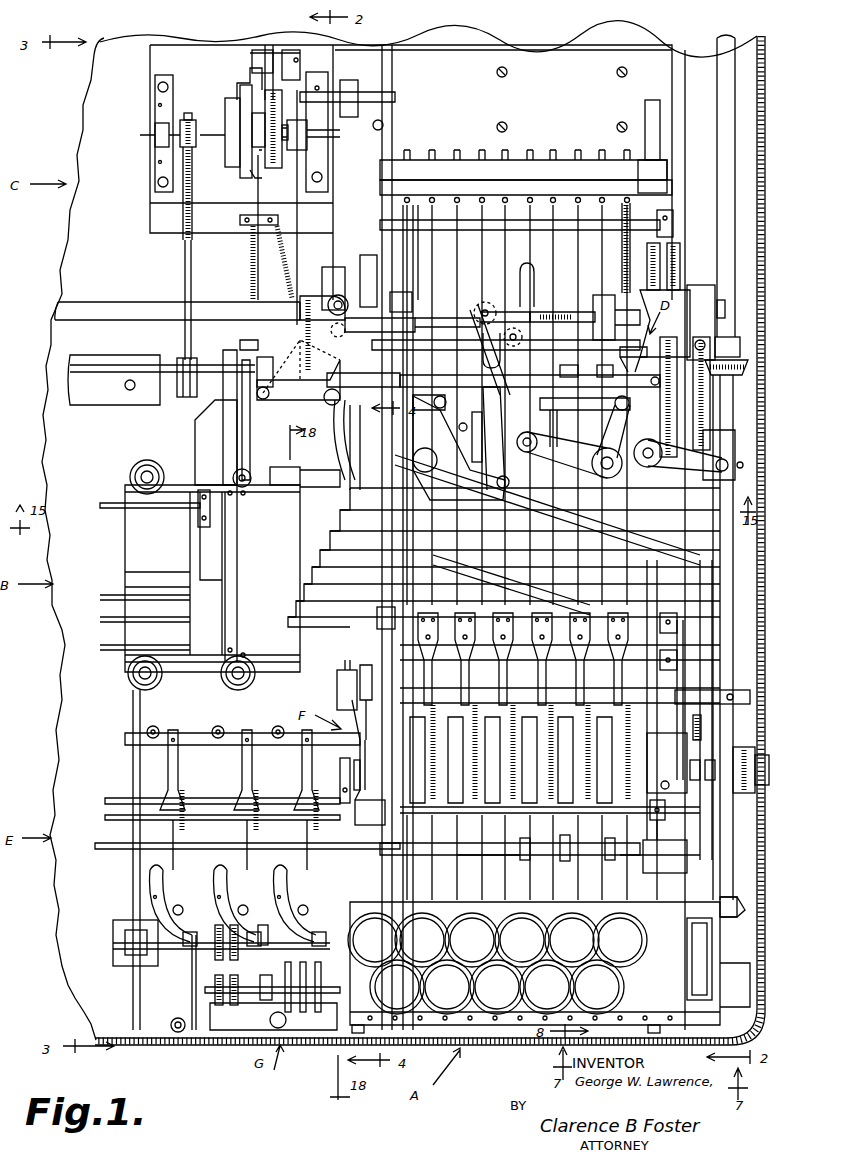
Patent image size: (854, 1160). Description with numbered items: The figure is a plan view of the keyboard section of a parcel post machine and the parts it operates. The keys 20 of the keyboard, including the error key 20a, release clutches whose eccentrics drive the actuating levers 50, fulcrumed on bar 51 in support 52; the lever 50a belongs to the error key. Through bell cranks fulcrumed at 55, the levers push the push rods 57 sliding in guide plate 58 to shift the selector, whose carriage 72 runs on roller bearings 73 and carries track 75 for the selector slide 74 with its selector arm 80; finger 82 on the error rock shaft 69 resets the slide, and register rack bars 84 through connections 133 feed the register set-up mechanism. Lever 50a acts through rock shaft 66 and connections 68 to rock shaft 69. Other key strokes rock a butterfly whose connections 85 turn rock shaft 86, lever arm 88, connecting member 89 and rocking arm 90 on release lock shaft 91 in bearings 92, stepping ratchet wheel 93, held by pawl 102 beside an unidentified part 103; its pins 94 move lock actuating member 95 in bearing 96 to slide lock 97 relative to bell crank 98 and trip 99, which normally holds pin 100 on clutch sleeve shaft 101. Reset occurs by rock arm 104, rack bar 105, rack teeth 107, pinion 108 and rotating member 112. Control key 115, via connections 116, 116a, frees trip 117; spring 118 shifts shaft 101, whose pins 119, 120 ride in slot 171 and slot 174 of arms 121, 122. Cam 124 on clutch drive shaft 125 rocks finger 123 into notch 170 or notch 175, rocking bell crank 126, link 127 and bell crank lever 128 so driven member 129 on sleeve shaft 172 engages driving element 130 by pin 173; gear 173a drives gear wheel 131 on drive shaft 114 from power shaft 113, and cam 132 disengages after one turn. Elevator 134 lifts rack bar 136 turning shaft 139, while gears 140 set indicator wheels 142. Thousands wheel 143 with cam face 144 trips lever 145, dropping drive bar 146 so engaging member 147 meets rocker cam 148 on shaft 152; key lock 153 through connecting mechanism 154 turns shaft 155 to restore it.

The keys 20 is at (630, 974).
The error key 20a is at (625, 990).
The actuating lever 50 is at (460, 150).
The actuating lever 50a is at (600, 155).
The bar 51 is at (548, 165).
The support 52 is at (645, 150).
The fulcrum 55 is at (380, 462).
The push rods 57 is at (340, 485).
The guide plate 58 is at (340, 698).
The rock shaft 66 is at (335, 708).
The connections 68 is at (320, 450).
The error rock shaft 69 is at (128, 375).
The selector carriage 72 is at (248, 679).
The roller bearings 73 is at (135, 685).
The selector slide 74 is at (196, 443).
The guide rail or track 75 is at (203, 680).
The selector arm 80 is at (100, 520).
The finger 82 is at (243, 445).
The register rack bars 84 is at (105, 620).
The connections 85 is at (390, 460).
The rock shaft 86 is at (320, 312).
The lever arm 88 is at (292, 296).
The connecting member 89 is at (318, 228).
The rocking arm 90 is at (300, 120).
The release lock shaft 91 is at (156, 135).
The bearings 92 is at (156, 180).
The ratchet wheel 93 is at (262, 175).
The pins 94 is at (252, 100).
The lock actuating member 95 is at (262, 194).
The bearing 96 is at (240, 220).
The lock 97 is at (272, 360).
The bell crank 98 is at (293, 405).
The trip 99 is at (440, 340).
The pin 100 is at (398, 312).
The clutch sleeve shaft 101 is at (420, 292).
The spring-tensioned pawl 102 is at (252, 53).
The plate 103 is at (300, 57).
The rock arm 104 is at (190, 395).
The rack bar 105 is at (188, 263).
The rack teeth 107 is at (196, 170).
The pinion 108 is at (215, 108).
The rotating member 112 is at (230, 110).
The power shaft 113 is at (722, 118).
The drive shaft 114 is at (110, 305).
The control key 115 is at (690, 925).
The connections 116 is at (350, 405).
The connections 116a is at (718, 460).
The trip 117 is at (440, 330).
The spring 118 is at (570, 300).
The pin 119 is at (480, 322).
The pin 120 is at (522, 316).
The arm 121 is at (500, 390).
The arm 122 is at (530, 380).
The rocking finger 123 is at (527, 337).
The cam 124 is at (512, 422).
The clutch drive shaft 125 is at (712, 458).
The bell crank 126 is at (445, 400).
The link 127 is at (545, 446).
The bell crank lever 128 is at (617, 412).
The driven member 129 is at (598, 365).
The driving element 130 is at (568, 365).
The gear wheel 131 is at (658, 250).
The cam 132 is at (620, 362).
The connections 133 is at (132, 772).
The elevator 134 is at (305, 910).
The rack bar 136 is at (305, 800).
The shaft 139 is at (330, 860).
The connecting gears 140 is at (188, 974).
The indicator wheels 142 is at (304, 1052).
The thousands of dollars wheel 143 is at (380, 712).
The cam face 144 is at (398, 845).
The trip lever 145 is at (380, 730).
The drive bar 146 is at (392, 128).
The engaging member 147 is at (352, 775).
The rocker cam 148 is at (350, 800).
The shaft 152 is at (190, 735).
The key lock 153 is at (740, 780).
The connecting mechanism 154 is at (660, 795).
The shaft 155 is at (345, 840).
The notch 170 is at (485, 370).
The slot 171 is at (480, 340).
The sleeve shaft 172 is at (622, 418).
The pin 173 is at (578, 392).
The gear 173a is at (715, 420).
The slot 174 is at (523, 268).
The notch 175 is at (540, 317).